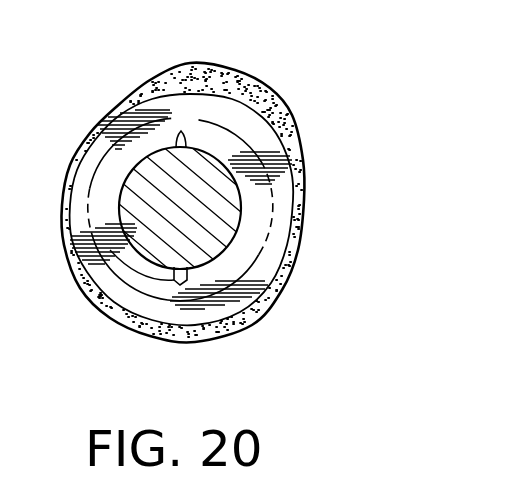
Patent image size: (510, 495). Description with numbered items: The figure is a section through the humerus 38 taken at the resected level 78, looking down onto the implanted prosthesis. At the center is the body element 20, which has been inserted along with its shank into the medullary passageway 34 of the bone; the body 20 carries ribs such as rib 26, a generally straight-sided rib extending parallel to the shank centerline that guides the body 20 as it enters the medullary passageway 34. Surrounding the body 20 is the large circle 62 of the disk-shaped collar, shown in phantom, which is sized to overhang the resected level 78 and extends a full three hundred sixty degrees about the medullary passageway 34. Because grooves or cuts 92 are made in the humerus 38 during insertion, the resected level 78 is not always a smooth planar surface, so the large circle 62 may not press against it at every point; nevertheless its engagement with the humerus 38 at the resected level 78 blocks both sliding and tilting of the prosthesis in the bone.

The body element 20 is at (208, 195).
The grooves or cuts 92 is at (184, 128).
The humerus 38 is at (240, 85).
The large circle 62 is at (273, 204).
The resected level 78 is at (282, 262).
The medullary passageway 34 is at (122, 262).
The rib 26 is at (165, 300).